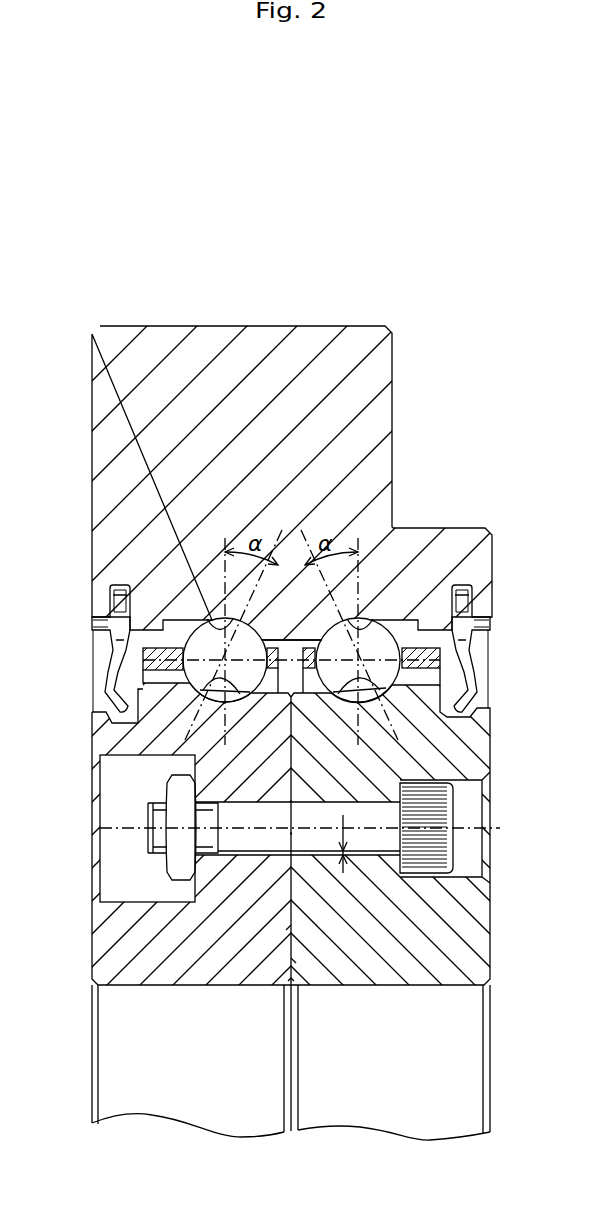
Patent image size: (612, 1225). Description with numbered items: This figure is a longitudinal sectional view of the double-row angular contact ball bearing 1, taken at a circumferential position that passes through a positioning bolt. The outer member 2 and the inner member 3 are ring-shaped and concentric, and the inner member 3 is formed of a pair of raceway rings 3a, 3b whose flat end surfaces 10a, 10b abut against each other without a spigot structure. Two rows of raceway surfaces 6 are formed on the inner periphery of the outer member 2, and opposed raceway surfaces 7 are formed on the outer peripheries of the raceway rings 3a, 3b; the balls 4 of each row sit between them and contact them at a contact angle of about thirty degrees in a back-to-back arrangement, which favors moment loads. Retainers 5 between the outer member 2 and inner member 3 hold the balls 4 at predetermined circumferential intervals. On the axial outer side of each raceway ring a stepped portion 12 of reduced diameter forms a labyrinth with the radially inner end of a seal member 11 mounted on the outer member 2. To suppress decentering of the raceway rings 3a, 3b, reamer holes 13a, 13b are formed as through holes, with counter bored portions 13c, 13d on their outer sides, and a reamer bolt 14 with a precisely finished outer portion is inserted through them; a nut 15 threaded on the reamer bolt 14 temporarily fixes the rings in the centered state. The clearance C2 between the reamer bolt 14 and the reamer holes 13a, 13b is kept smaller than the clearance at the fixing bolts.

The double-row angular contact ball bearing 1 is at (343, 290).
The outer member 2 is at (270, 326).
The inner member 3 is at (306, 612).
The raceway ring 3a is at (306, 600).
The raceway ring 3b is at (306, 719).
The balls 4 is at (153, 643).
The retainers 5 is at (117, 605).
The raceway surfaces 6 is at (186, 636).
The raceway surfaces 7 is at (192, 699).
The end surface 10a is at (297, 958).
The end surface 10b is at (292, 923).
The seal member 11 is at (120, 643).
The stepped portion 12 is at (107, 698).
The reamer hole 13a is at (258, 855).
The reamer hole 13b is at (357, 855).
The counter bored portion 13c is at (128, 900).
The counter bored portion 13d is at (485, 868).
The reamer bolt 14 is at (455, 820).
The nut 15 is at (168, 790).
The clearance C2 is at (329, 864).